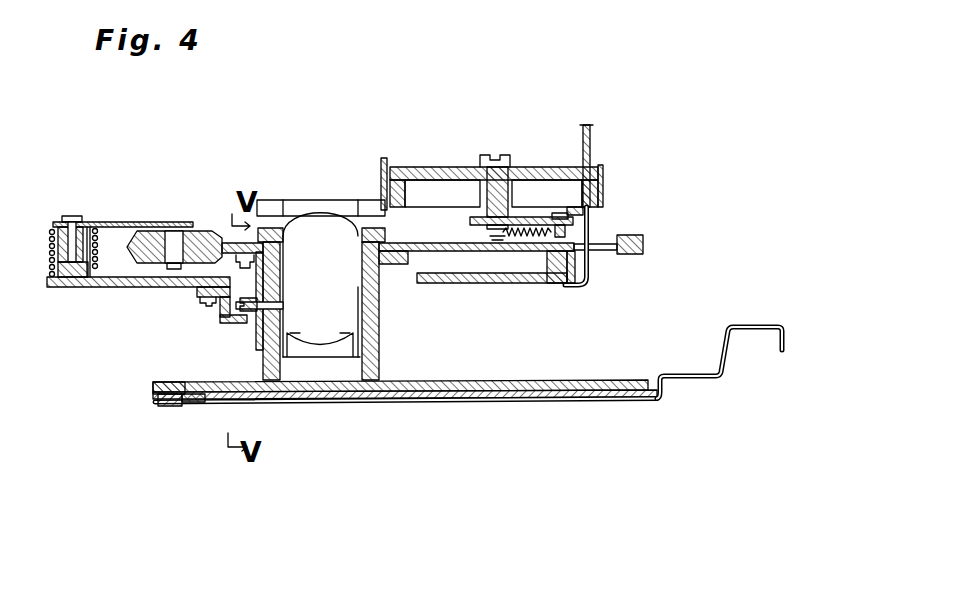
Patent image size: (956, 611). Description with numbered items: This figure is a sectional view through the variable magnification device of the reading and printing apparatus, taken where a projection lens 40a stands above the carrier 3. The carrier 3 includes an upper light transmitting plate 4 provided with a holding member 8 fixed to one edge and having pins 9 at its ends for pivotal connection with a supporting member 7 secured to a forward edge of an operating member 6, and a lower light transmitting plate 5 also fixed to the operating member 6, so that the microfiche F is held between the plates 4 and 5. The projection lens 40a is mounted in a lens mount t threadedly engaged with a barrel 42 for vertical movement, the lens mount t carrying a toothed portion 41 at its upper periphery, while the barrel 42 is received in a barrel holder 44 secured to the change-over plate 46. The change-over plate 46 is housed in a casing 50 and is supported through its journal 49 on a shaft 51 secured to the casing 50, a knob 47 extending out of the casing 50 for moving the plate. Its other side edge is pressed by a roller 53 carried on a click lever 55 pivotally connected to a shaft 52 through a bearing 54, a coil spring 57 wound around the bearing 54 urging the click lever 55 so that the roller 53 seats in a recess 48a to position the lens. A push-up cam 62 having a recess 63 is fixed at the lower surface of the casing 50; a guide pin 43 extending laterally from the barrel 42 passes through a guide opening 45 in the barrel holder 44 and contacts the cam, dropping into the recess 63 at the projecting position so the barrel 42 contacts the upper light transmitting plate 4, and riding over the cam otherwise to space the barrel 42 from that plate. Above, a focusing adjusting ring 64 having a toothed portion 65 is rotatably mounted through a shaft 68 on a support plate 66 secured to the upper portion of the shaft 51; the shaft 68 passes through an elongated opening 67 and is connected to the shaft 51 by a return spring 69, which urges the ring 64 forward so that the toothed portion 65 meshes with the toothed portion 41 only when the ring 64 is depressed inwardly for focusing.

The carrier 3 is at (523, 400).
The upper light transmitting plate 4 is at (585, 388).
The lower light transmitting plate 5 is at (597, 393).
The operating member 6 is at (700, 376).
The supporting member 7 is at (158, 406).
The holding member 8 is at (193, 400).
The pins 9 is at (167, 381).
The microfiche F is at (422, 390).
The lens mount t is at (284, 208).
The projection lens 40a is at (312, 216).
The toothed portion 41 is at (380, 212).
The barrel 42 is at (380, 358).
The guide pin 43 is at (284, 302).
The barrel holder 44 is at (382, 312).
The guide opening 45 is at (281, 290).
The change-over plate 46 is at (450, 262).
The knob 47 is at (645, 244).
The recess 48a is at (215, 232).
The journal 49 is at (572, 240).
The casing 50 is at (593, 286).
The shaft 51 is at (562, 274).
The shaft 52 is at (72, 274).
The roller 53 is at (190, 231).
The bearing 54 is at (122, 228).
The click lever 55 is at (104, 222).
The coil spring 57 is at (97, 268).
The push-up cam 62 is at (232, 324).
The recess 63 is at (228, 316).
The focusing adjusting ring 64 is at (438, 167).
The toothed portion 65 is at (384, 165).
The support plate 66 is at (550, 226).
The elongated opening 67 is at (510, 232).
The shaft 68 is at (494, 182).
The return spring 69 is at (522, 252).